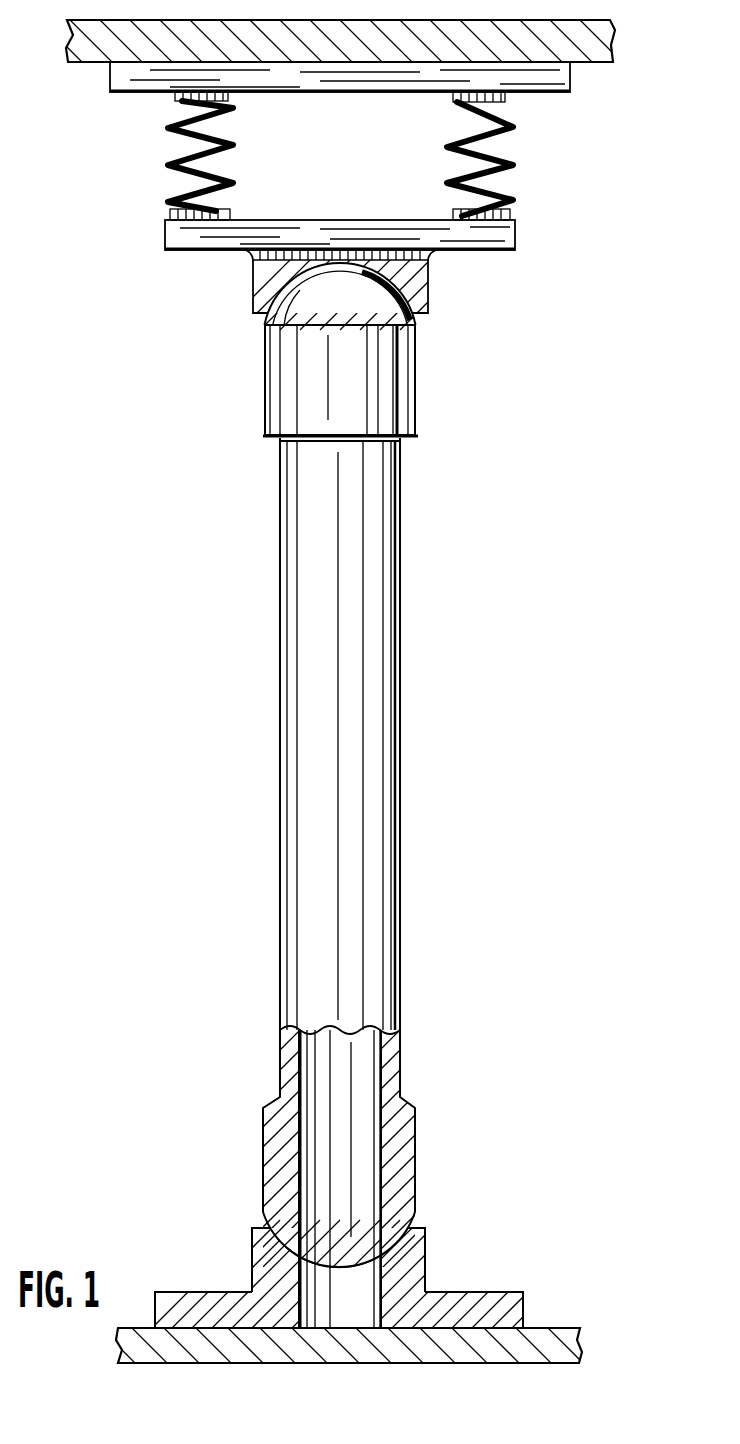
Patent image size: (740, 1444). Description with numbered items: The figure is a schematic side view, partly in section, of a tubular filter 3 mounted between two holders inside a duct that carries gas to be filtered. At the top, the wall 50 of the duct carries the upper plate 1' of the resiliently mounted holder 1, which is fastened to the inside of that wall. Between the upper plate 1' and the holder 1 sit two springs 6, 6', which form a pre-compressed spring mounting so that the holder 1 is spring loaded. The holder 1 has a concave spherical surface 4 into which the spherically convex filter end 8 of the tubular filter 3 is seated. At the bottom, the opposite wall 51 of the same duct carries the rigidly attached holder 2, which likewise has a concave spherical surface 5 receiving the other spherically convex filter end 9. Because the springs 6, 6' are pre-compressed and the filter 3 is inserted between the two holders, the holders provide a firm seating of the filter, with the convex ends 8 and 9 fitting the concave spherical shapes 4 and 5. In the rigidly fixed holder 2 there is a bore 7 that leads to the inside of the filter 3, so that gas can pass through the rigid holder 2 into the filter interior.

The wall 50 is at (76, 60).
The upper plate 1' is at (365, 90).
The spring 6 is at (184, 156).
The spring 6' is at (497, 156).
The holder 1 is at (359, 240).
The concave spherical surface 4 is at (345, 287).
The filter end 8 is at (345, 302).
The tubular filter 3 is at (373, 717).
The bore 7 is at (322, 1282).
The filter end 9 is at (397, 1223).
The concave spherical surface 5 is at (388, 1250).
The holder 2 is at (503, 1307).
The wall 51 is at (577, 1327).